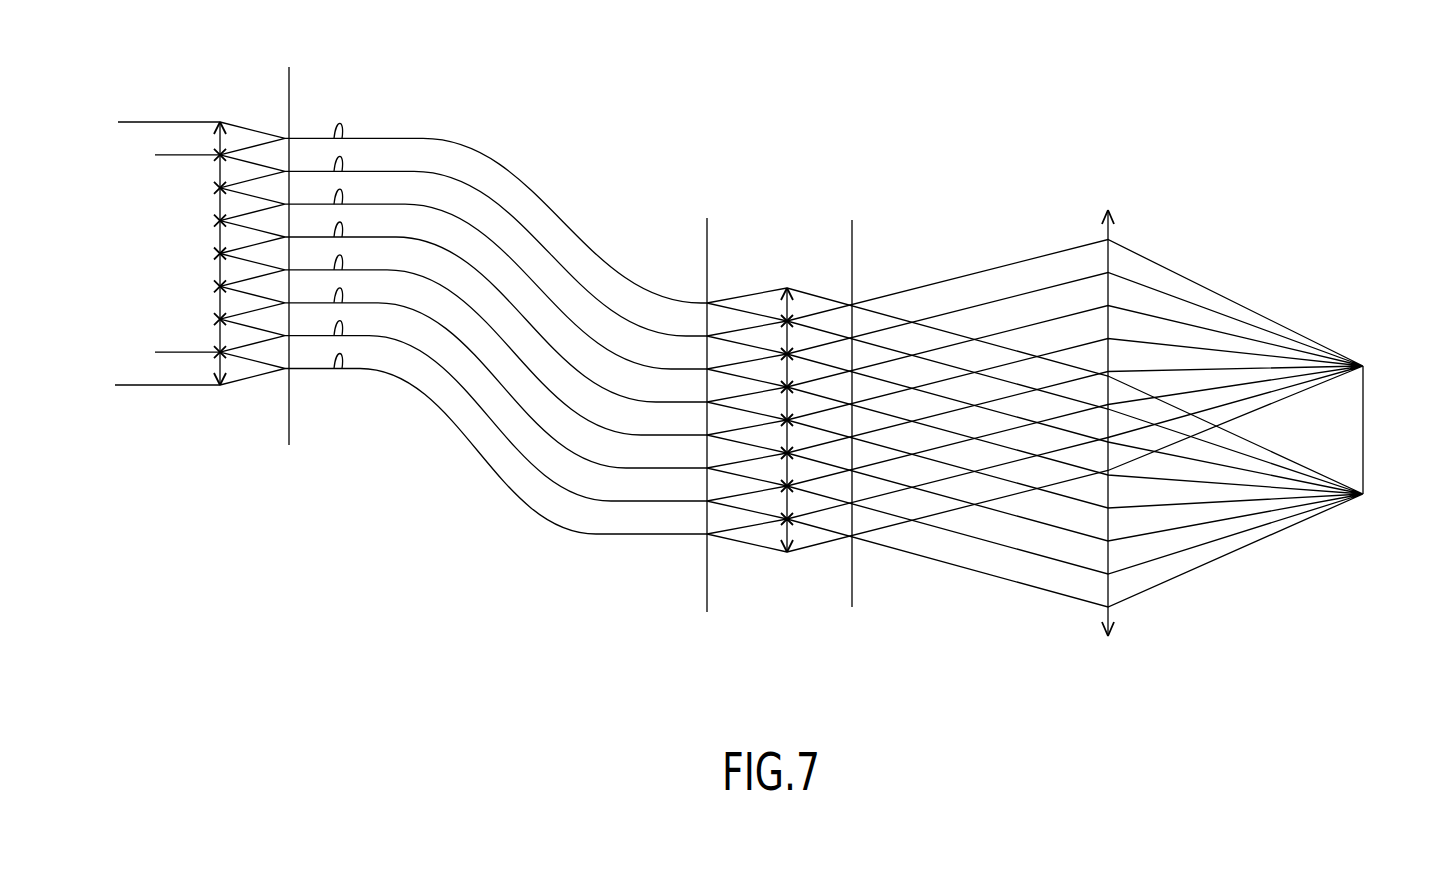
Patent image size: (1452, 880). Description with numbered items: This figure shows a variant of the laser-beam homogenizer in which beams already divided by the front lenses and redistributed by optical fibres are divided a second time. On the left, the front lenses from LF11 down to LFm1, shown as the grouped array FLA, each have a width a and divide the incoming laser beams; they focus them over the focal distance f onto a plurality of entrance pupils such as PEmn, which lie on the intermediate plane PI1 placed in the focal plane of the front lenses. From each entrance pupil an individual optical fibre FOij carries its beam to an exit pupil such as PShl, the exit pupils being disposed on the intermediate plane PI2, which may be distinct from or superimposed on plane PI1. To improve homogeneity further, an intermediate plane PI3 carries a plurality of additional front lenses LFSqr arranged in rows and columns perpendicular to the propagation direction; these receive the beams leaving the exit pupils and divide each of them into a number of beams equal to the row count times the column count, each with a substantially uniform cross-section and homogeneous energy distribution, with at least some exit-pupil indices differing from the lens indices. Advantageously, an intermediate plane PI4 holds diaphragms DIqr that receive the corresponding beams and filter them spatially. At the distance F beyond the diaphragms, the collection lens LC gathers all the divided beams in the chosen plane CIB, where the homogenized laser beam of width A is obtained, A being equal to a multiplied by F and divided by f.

The front lens LF11 is at (219, 121).
The front lens LFm1 is at (230, 378).
The input fiber linear array FLA is at (164, 388).
The width of a front lens a is at (196, 256).
The focal distance f is at (531, 193).
The entrance pupil PEmn is at (292, 376).
The intermediate plane PI1 is at (290, 86).
The optical fibre FOij is at (392, 394).
The intermediate plane PI2 is at (706, 228).
The exit pupil PShl is at (706, 540).
The intermediate plane PI3 is at (786, 286).
The additional front lens LFSqr is at (792, 550).
The diaphragm DIqr is at (854, 562).
The intermediate plane PI4 is at (853, 250).
The collection lens LC is at (1114, 216).
The distance between diaphragm and collection lens F is at (1117, 258).
The chosen plane CIB is at (1366, 462).
The width of the homogenized laser beam A is at (1389, 412).